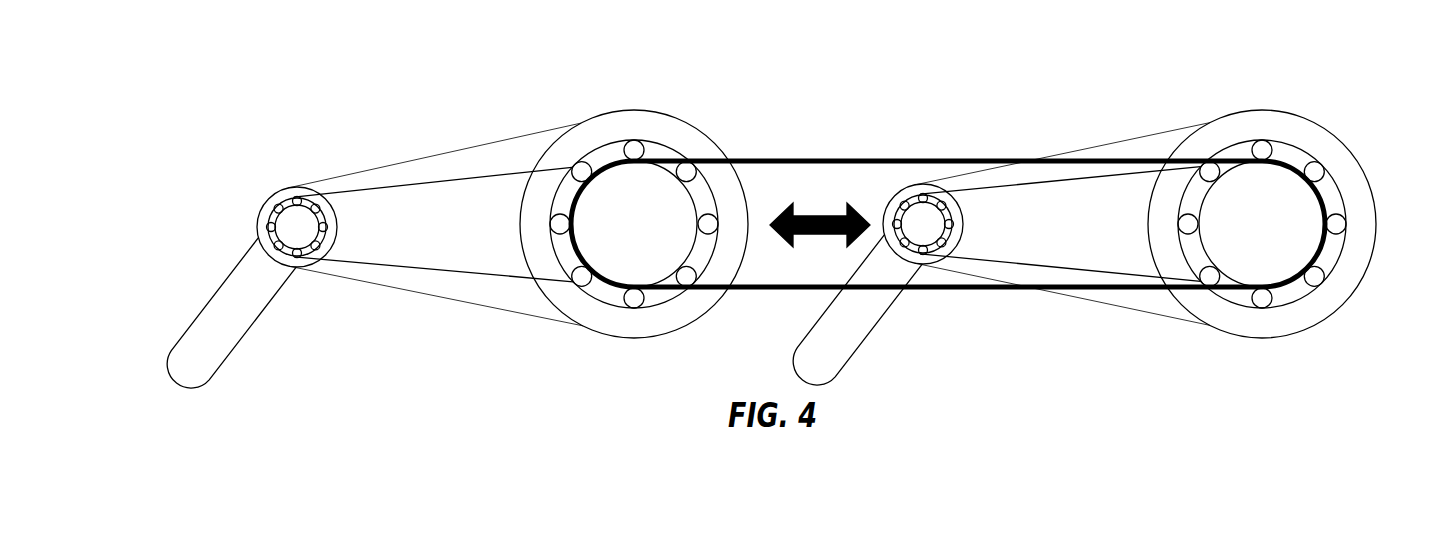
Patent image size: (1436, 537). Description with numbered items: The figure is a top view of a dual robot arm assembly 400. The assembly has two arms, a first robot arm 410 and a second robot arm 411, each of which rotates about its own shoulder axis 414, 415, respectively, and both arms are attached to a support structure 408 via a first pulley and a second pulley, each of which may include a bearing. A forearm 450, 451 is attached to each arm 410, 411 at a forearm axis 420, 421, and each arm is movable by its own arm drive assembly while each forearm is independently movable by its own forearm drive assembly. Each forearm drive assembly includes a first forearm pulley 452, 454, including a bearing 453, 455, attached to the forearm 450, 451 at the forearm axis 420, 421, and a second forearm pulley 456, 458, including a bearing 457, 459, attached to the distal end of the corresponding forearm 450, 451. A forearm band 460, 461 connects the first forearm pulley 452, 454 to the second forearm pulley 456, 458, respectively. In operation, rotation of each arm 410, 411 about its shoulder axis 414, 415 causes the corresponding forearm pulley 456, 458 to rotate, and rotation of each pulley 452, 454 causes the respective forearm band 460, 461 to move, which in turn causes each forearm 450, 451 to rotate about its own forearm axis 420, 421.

The dual robot arm assembly 400 is at (1341, 38).
The support structure 408 is at (813, 160).
The first robot arm 410 is at (1118, 147).
The second robot arm 411 is at (451, 156).
The shoulder axis 414 is at (1262, 225).
The shoulder axis 415 is at (633, 225).
The forearm axis 420 is at (924, 225).
The forearm axis 421 is at (295, 225).
The forearm 450 is at (885, 318).
The forearm 451 is at (215, 285).
The first forearm pulley 452 is at (914, 204).
The bearing 453 is at (926, 255).
The first forearm pulley 454 is at (312, 186).
The bearing 455 is at (297, 256).
The second forearm pulley 456 is at (1338, 270).
The bearing 457 is at (1242, 147).
The second forearm pulley 458 is at (700, 276).
The bearing 459 is at (612, 147).
The forearm band 460 is at (1068, 268).
The forearm band 461 is at (480, 270).